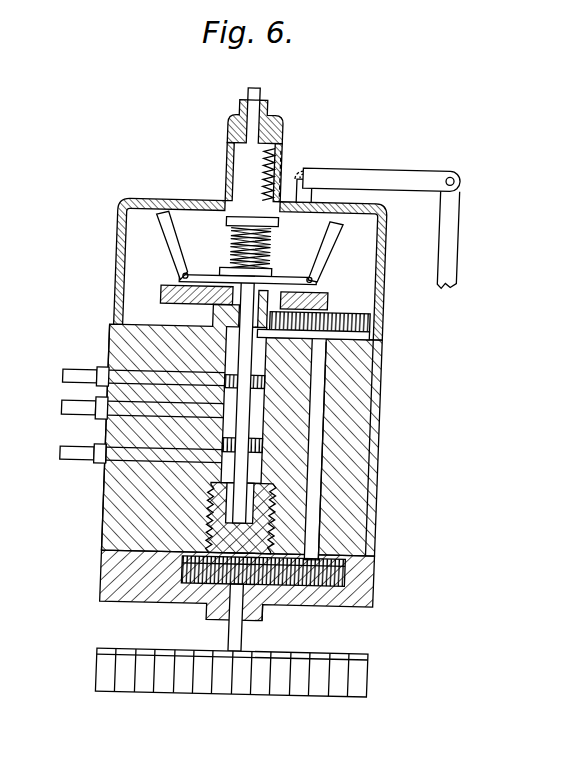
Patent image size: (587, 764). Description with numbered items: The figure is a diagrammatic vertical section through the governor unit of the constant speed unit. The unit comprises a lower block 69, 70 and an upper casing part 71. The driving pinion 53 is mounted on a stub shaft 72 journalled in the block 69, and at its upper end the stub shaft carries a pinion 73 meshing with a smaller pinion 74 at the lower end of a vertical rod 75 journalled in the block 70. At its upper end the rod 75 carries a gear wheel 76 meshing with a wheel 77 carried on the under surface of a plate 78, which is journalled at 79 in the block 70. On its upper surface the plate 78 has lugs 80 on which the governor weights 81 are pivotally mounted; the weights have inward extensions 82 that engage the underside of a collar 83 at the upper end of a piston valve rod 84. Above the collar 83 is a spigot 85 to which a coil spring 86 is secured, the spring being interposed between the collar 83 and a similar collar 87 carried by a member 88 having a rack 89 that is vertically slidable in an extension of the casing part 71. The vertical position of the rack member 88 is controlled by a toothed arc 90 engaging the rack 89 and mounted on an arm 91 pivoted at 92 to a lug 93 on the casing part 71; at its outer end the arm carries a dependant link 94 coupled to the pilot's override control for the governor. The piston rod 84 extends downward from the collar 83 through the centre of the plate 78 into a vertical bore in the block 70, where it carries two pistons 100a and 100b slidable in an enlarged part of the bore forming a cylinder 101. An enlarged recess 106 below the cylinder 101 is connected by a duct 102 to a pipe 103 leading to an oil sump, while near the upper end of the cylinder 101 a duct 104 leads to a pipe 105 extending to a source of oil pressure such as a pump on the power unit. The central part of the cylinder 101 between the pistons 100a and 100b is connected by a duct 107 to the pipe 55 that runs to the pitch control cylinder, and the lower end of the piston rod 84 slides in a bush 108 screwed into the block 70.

The driving pinion 53 is at (185, 676).
The pipe 55 is at (63, 414).
The lower block 69 is at (108, 575).
The block 70 is at (122, 533).
The upper casing part 71 is at (112, 251).
The stub shaft 72 is at (236, 630).
The pinion 73 is at (298, 609).
The smaller pinion 74 is at (346, 608).
The vertical rod 75 is at (371, 424).
The gear wheel 76 is at (365, 314).
The wheel 77 is at (319, 296).
The plate 78 is at (309, 281).
The journal 79 is at (368, 347).
The lugs 80 is at (176, 279).
The governor weights 81 is at (150, 216).
The inward extensions 82 is at (315, 268).
The collar 83 is at (228, 270).
The piston valve rod 84 is at (226, 423).
The spigot 85 is at (240, 255).
The coil spring 86 is at (266, 239).
The collar 87 is at (223, 208).
The member 88 is at (237, 190).
The rack 89 is at (263, 157).
The toothed arc 90 is at (257, 168).
The arm 91 is at (369, 174).
The pivot 92 is at (295, 174).
The lug 93 is at (306, 195).
The dependant link 94 is at (442, 243).
The piston 100a is at (363, 392).
The piston 100b is at (365, 454).
The cylinder 101 is at (369, 375).
The duct 102 is at (117, 456).
The pipe 103 is at (69, 456).
The duct 104 is at (110, 343).
The pipe 105 is at (82, 378).
The enlarged recess 106 is at (281, 471).
The duct 107 is at (148, 410).
The bush 108 is at (289, 519).